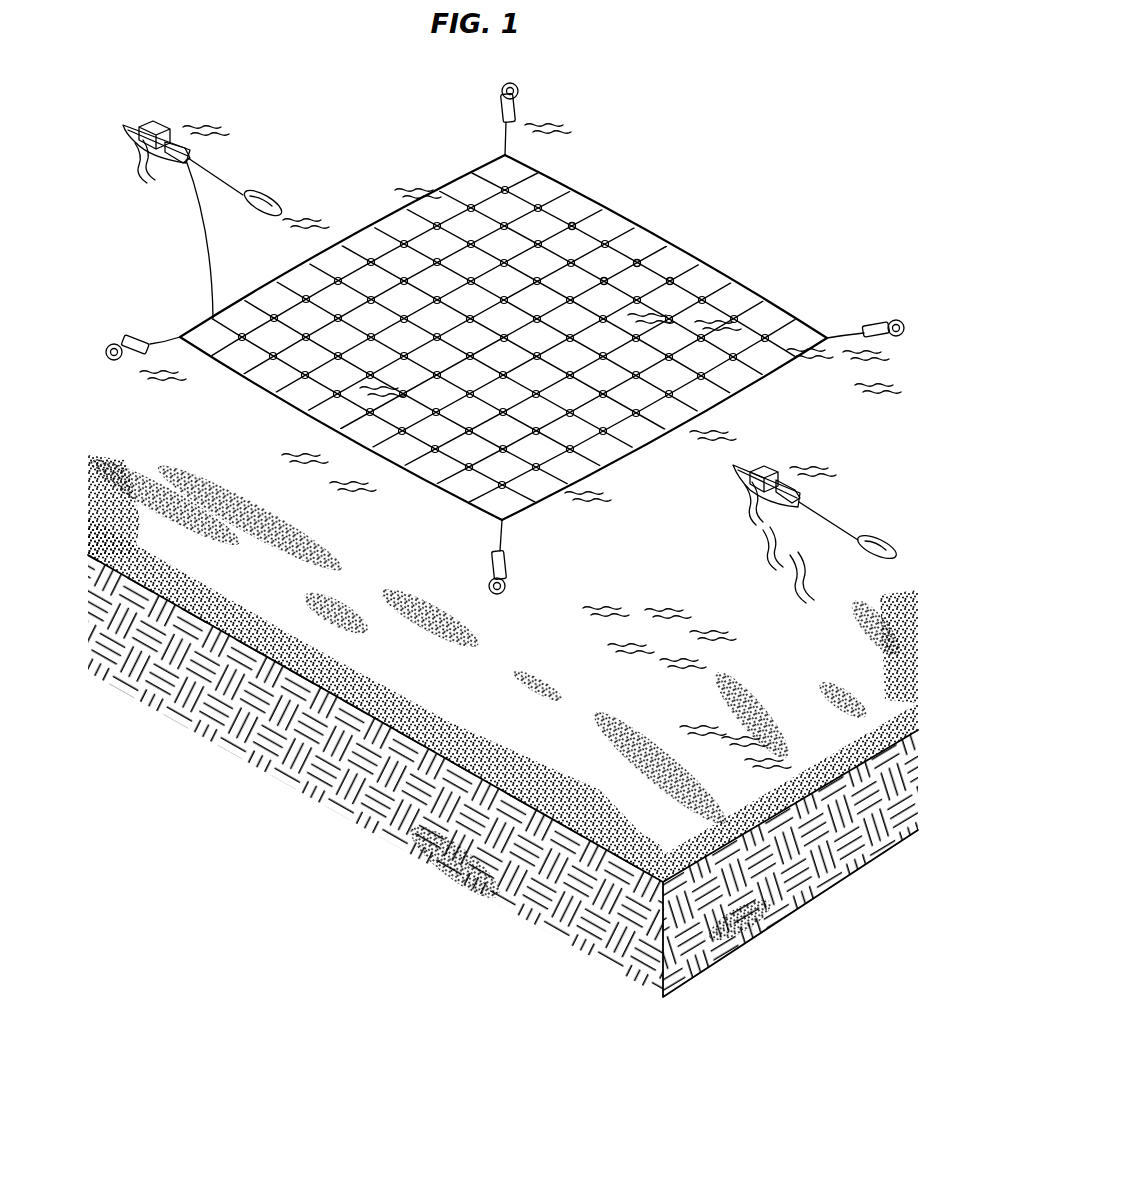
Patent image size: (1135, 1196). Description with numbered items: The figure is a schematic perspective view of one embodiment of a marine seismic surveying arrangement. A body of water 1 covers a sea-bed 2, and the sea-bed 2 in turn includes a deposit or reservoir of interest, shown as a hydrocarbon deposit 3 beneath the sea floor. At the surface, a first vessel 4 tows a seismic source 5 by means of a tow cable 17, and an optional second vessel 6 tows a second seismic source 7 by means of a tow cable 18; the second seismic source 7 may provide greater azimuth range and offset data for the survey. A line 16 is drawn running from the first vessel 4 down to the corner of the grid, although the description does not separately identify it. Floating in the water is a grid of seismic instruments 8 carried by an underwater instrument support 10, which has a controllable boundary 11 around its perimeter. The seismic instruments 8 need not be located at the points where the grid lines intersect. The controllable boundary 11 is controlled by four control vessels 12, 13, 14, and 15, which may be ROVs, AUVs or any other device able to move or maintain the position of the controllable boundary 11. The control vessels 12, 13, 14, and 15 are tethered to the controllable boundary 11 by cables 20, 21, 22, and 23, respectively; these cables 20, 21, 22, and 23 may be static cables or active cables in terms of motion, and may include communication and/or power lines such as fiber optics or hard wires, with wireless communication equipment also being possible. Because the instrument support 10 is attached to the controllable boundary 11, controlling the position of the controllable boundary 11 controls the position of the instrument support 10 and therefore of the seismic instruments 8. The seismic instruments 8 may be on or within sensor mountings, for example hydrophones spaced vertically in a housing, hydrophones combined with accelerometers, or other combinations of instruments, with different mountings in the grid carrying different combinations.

The body of water 1 is at (638, 651).
The sea-bed 2 is at (625, 833).
The hydrocarbon deposit 3 is at (461, 868).
The first vessel 4 is at (165, 126).
The seismic source 5 is at (270, 196).
The second vessel 6 is at (765, 468).
The second seismic source 7 is at (881, 541).
The seismic instruments 8 is at (667, 281).
The underwater instrument support 10 is at (503, 337).
The controllable boundary 11 is at (742, 292).
The control vessel 12 is at (130, 338).
The control vessel 13 is at (511, 566).
The control vessel 14 is at (500, 106).
The control vessel 15 is at (878, 324).
The tow line to net 16 is at (211, 246).
The tow cable 17 is at (232, 182).
The tow cable 18 is at (841, 518).
The cable 20 is at (158, 338).
The cable 21 is at (504, 537).
The cable 22 is at (500, 150).
The cable 23 is at (846, 333).